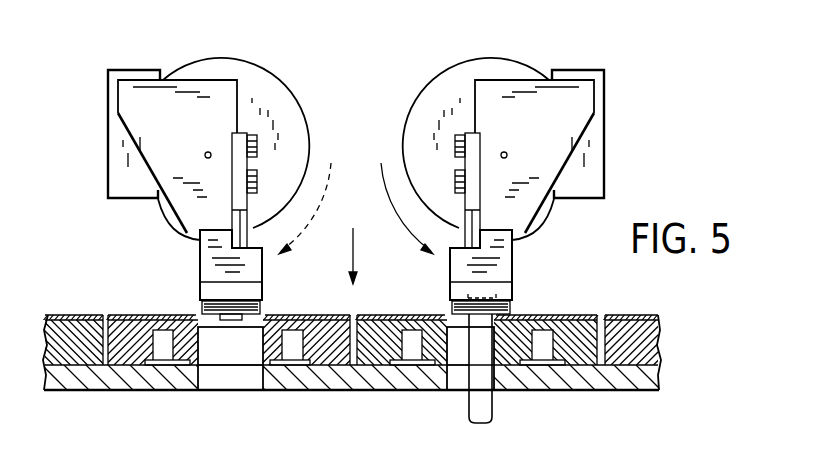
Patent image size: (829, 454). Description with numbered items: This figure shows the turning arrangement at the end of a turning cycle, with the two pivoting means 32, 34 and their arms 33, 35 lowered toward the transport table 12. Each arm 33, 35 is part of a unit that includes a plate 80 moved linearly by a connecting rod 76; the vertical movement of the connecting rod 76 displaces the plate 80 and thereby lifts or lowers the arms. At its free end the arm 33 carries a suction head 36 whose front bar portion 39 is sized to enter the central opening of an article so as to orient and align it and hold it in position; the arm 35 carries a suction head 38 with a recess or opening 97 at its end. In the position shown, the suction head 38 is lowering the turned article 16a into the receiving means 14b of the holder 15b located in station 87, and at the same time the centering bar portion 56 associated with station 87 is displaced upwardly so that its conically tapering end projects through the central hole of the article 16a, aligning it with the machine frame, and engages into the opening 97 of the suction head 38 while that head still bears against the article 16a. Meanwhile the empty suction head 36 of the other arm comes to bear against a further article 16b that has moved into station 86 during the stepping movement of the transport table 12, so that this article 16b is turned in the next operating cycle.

The transport table 12 is at (668, 340).
The receiving means 14b is at (594, 312).
The holder 15b is at (383, 348).
The article 16a is at (408, 315).
The further article 16b is at (297, 317).
The first pivoting means 32 is at (303, 70).
The arm 33 is at (237, 200).
The second pivoting means 34 is at (430, 72).
The arm 35 is at (473, 165).
The suction head 36 is at (180, 289).
The suction head 38 is at (530, 288).
The bar portion 39 is at (241, 322).
The centering bar portion 56 is at (482, 392).
The connecting rod 76 is at (128, 70).
The plate 80 is at (150, 137).
The station 86 is at (104, 285).
The station 87 is at (608, 304).
The recess or opening 97 is at (490, 292).